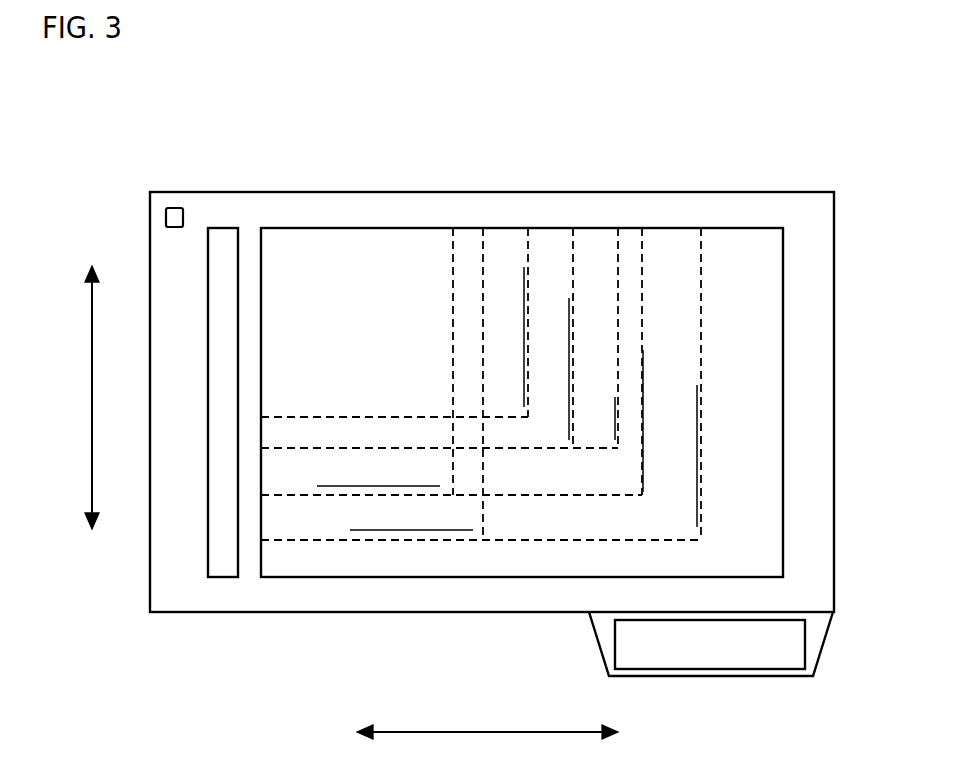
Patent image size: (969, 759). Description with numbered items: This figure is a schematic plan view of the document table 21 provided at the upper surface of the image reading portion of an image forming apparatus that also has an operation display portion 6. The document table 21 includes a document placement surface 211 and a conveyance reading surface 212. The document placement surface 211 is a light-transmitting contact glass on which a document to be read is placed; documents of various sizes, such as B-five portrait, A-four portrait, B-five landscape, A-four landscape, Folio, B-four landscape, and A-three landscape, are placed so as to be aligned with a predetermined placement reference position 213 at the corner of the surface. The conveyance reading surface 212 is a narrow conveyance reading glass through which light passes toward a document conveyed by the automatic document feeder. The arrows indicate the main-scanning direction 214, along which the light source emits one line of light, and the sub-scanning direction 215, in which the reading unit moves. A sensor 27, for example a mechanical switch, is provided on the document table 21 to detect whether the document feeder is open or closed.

The operation display portion 6 is at (808, 645).
The document table 21 is at (417, 612).
The sensor 27 is at (171, 207).
The document placement surface 211 is at (325, 578).
The conveyance reading surface 212 is at (223, 578).
The placement reference position 213 is at (269, 237).
The main-scanning direction 214 is at (91, 393).
The sub-scanning direction 215 is at (488, 726).